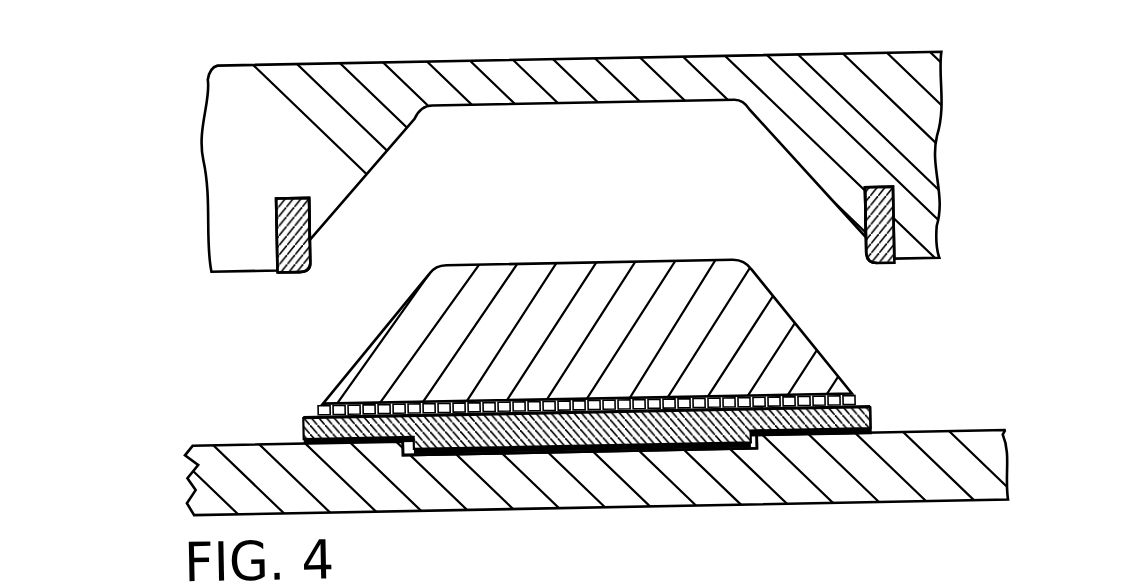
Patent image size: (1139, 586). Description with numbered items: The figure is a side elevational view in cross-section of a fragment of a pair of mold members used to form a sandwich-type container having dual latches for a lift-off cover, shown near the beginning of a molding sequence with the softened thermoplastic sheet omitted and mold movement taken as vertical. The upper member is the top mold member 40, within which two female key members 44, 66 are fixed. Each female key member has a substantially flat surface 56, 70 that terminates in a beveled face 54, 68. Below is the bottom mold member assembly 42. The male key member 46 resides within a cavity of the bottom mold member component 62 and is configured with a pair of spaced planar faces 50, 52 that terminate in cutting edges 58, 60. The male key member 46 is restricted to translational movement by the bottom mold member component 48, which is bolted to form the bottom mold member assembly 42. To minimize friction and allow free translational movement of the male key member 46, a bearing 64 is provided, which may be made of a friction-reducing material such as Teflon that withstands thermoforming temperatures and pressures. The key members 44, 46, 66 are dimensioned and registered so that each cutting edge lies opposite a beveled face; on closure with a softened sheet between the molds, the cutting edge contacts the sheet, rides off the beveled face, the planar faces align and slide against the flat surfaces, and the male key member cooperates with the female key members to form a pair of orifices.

The top mold member 40 is at (928, 182).
The bottom mold member assembly 42 is at (595, 355).
The female key member 44 is at (315, 259).
The male key member 46 is at (535, 460).
The bottom mold member component 48 is at (824, 380).
The planar face 50 is at (300, 434).
The planar face 52 is at (870, 430).
The beveled face 54 is at (308, 267).
The flat surface 56 is at (311, 249).
The cutting edge 58 is at (303, 420).
The cutting edge 60 is at (868, 420).
The bottom mold member component 62 is at (598, 471).
The bearing 64 is at (320, 407).
The female key member 66 is at (868, 245).
The beveled face 68 is at (866, 273).
The flat surface 70 is at (863, 261).